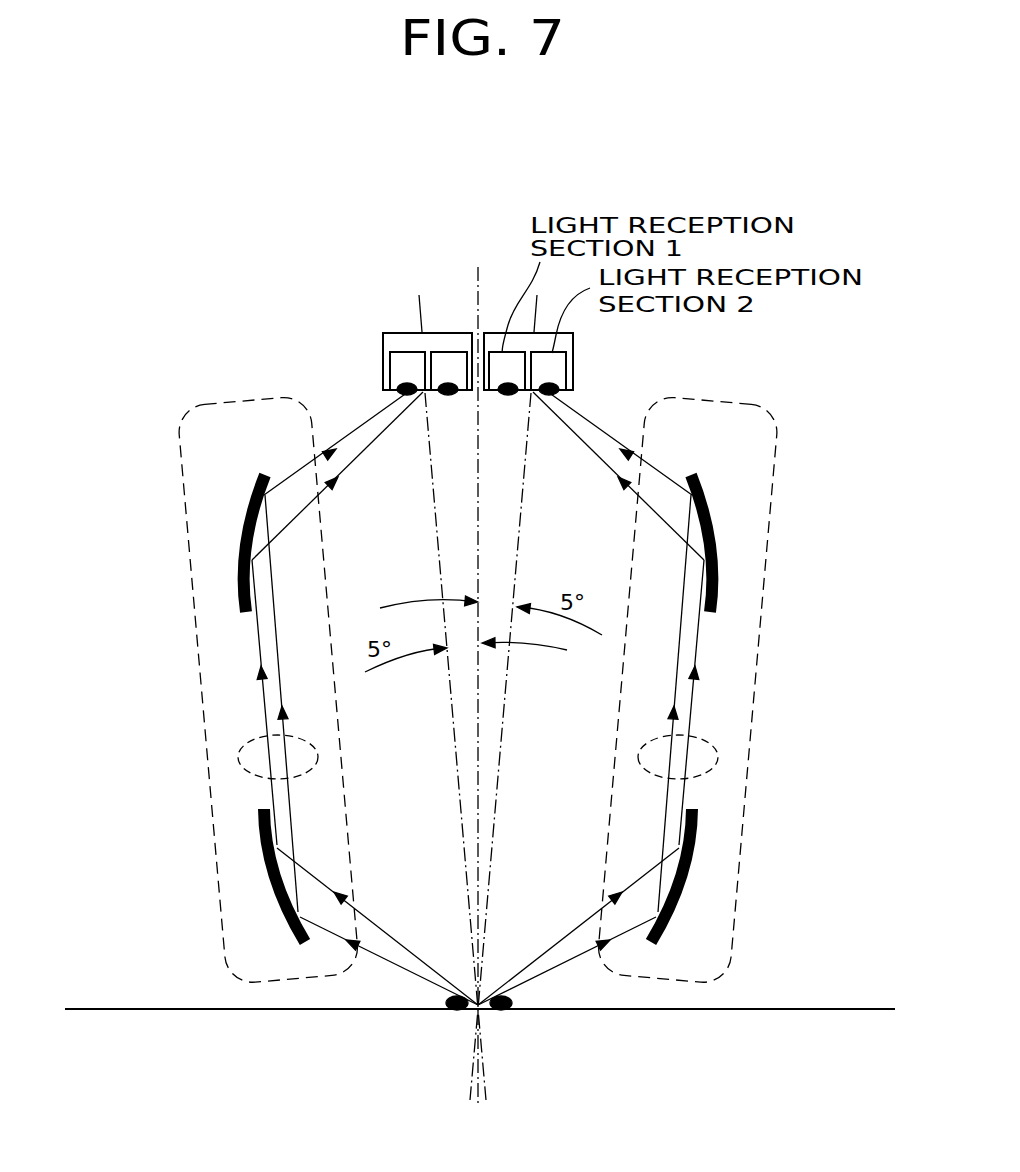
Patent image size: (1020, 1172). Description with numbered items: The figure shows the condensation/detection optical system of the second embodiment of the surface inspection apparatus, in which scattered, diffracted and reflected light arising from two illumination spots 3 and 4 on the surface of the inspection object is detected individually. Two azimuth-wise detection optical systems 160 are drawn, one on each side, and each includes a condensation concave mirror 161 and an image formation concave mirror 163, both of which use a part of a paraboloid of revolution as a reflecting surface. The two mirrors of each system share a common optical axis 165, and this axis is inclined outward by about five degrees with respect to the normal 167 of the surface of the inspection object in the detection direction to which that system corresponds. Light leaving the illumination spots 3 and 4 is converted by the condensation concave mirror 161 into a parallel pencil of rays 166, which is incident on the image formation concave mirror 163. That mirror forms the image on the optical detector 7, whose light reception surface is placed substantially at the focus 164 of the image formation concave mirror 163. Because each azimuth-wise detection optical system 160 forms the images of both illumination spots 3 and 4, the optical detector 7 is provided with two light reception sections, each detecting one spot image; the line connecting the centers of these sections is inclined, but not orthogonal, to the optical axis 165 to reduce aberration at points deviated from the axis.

The illumination spot 3 is at (457, 1010).
The illumination spot 4 is at (502, 1010).
The optical detector 7 is at (383, 372).
The azimuth-wise detection optical system 160 is at (250, 402).
The condensation concave mirror 161 is at (267, 858).
The image formation concave mirror 163 is at (242, 510).
The focus of the image formation concave mirror 164 is at (427, 398).
The common optical axis 165 is at (453, 720).
The parallel pencil of rays 166 is at (238, 752).
The normal of the surface of the inspection object 167 is at (480, 282).